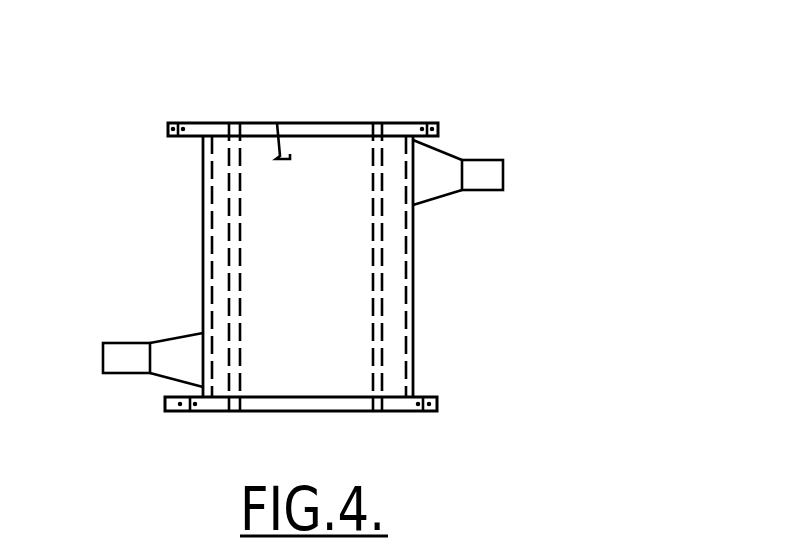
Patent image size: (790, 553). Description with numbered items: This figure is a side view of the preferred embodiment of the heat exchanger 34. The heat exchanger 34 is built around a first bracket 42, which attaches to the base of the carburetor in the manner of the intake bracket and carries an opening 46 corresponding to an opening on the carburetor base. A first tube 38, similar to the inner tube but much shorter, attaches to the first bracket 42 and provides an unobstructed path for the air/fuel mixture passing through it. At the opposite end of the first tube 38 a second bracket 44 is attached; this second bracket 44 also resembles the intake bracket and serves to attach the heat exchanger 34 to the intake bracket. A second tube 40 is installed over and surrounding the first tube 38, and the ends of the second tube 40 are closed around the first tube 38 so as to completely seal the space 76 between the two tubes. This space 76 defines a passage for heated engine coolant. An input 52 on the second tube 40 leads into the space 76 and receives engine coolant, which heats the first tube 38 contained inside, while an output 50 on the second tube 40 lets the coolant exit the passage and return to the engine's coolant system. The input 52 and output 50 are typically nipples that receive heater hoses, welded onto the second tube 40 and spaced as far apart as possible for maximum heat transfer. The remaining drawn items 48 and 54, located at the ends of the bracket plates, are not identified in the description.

The heat exchanger 34 is at (573, 278).
The first tube 38 is at (277, 123).
The second tube 40 is at (413, 290).
The first bracket 42 is at (212, 122).
The second bracket 44 is at (267, 413).
The opening 46 is at (350, 125).
The bottom plate 48 is at (340, 412).
The output 50 is at (412, 175).
The input 52 is at (207, 368).
The fasteners 54 is at (427, 127).
The space 76 is at (403, 338).